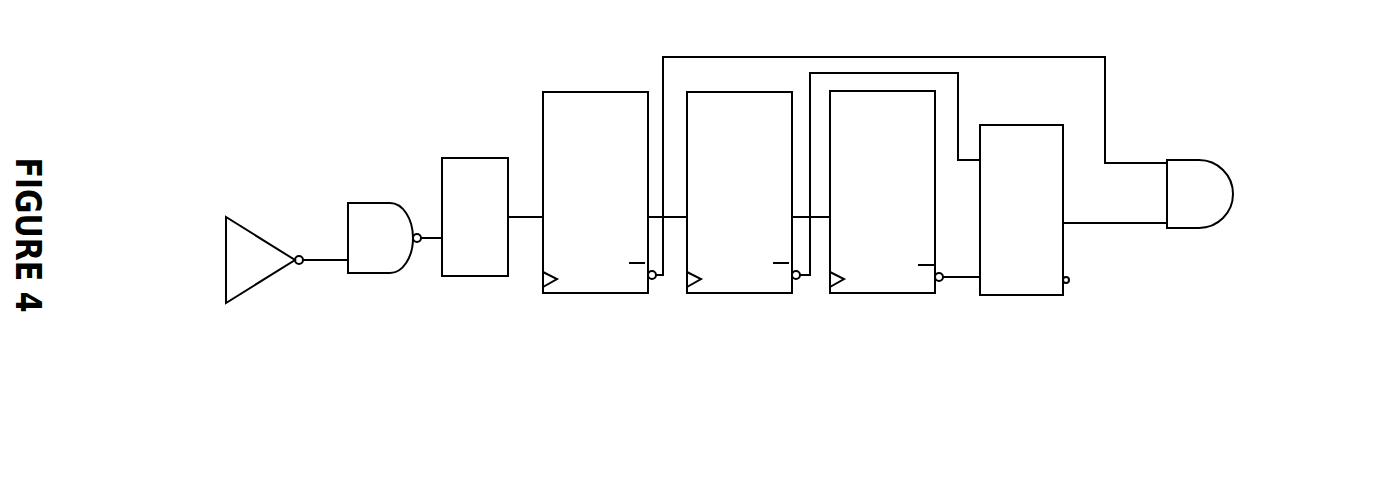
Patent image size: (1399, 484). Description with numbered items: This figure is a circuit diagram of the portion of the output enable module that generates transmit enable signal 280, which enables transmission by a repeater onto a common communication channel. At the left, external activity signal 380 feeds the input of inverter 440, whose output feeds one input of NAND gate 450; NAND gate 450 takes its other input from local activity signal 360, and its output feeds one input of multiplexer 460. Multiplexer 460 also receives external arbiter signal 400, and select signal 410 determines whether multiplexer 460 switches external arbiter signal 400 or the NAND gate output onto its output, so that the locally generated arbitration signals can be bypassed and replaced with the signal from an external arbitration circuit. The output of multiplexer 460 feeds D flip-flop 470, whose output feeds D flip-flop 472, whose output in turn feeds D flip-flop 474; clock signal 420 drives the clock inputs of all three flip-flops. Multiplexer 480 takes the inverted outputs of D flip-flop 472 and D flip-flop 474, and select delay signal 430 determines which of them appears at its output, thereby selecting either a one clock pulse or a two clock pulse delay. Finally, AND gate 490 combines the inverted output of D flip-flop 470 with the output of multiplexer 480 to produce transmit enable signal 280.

The external arbiter signal 400 is at (442, 172).
The local activity signal 360 is at (348, 213).
The external activity signal 380 is at (226, 260).
The inverter 440 is at (287, 260).
The NAND gate 450 is at (395, 238).
The multiplexer 460 is at (475, 217).
The select signal 410 is at (475, 276).
The D flip-flop 470 is at (599, 192).
The D flip-flop 472 is at (743, 192).
The D flip-flop 474 is at (886, 192).
The multiplexer 480 is at (1024, 210).
The AND gate 490 is at (1200, 194).
The transmit enable signal 280 is at (1233, 194).
The clock signal 420 is at (830, 283).
The select delay signal 430 is at (1025, 295).